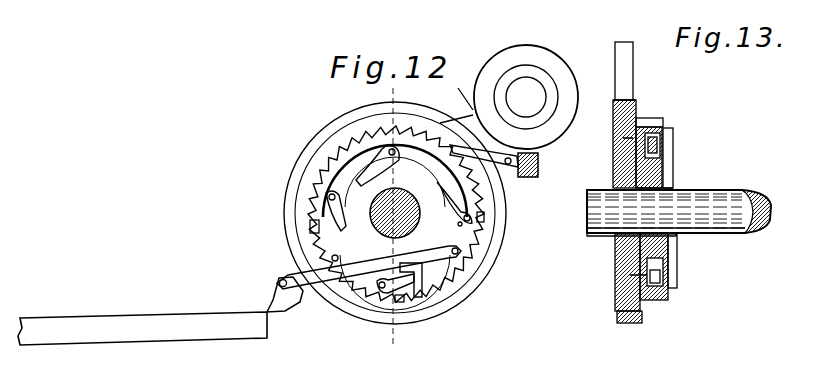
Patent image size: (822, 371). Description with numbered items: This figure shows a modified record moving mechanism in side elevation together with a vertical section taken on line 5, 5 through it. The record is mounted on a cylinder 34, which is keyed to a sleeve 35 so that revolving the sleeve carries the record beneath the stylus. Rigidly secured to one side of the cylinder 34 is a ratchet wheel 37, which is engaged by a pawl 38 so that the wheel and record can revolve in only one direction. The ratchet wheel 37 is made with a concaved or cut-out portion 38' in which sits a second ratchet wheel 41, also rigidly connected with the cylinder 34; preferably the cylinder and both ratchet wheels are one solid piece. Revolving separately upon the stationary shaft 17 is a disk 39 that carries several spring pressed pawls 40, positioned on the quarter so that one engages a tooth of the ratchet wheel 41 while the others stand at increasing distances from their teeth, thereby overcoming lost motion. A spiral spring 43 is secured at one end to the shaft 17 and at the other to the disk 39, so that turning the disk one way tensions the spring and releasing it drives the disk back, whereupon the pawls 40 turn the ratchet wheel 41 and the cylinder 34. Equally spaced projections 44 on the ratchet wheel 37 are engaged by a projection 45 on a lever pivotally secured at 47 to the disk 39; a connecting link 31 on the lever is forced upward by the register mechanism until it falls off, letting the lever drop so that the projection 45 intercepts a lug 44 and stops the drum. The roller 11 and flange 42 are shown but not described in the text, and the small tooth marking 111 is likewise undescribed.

In FIG. 12, the section line 5 is at (395, 216).
In FIG. 12, the roller 11 is at (507, 97).
In FIG. 13, the shaft 17 is at (748, 191).
In FIG. 12, the connecting link 31 is at (262, 300).
In FIG. 13, the cylinder 34 is at (606, 146).
In FIG. 13, the sleeve 35 is at (613, 237).
In FIG. 12, the ratchet wheel 37 is at (318, 163).
In FIG. 13, the ratchet wheel 37 is at (660, 118).
In FIG. 12, the pawl 38 is at (497, 173).
In FIG. 13, the concaved or cut-out portion 38' is at (693, 224).
In FIG. 12, the disk 39 is at (394, 166).
In FIG. 13, the disk 39 is at (673, 143).
In FIG. 12, the pawls 40 is at (312, 210).
In FIG. 12, the ratchet wheel 41 is at (365, 189).
In FIG. 13, the flange 42 is at (671, 176).
In FIG. 13, the spiral spring 43 is at (615, 258).
In FIG. 12, the projections 44 is at (343, 273).
In FIG. 13, the projections 44 is at (680, 287).
In FIG. 12, the projection 45 is at (485, 297).
In FIG. 12, the pivot 47 is at (462, 250).
In FIG. 12, the tooth 111 is at (380, 307).